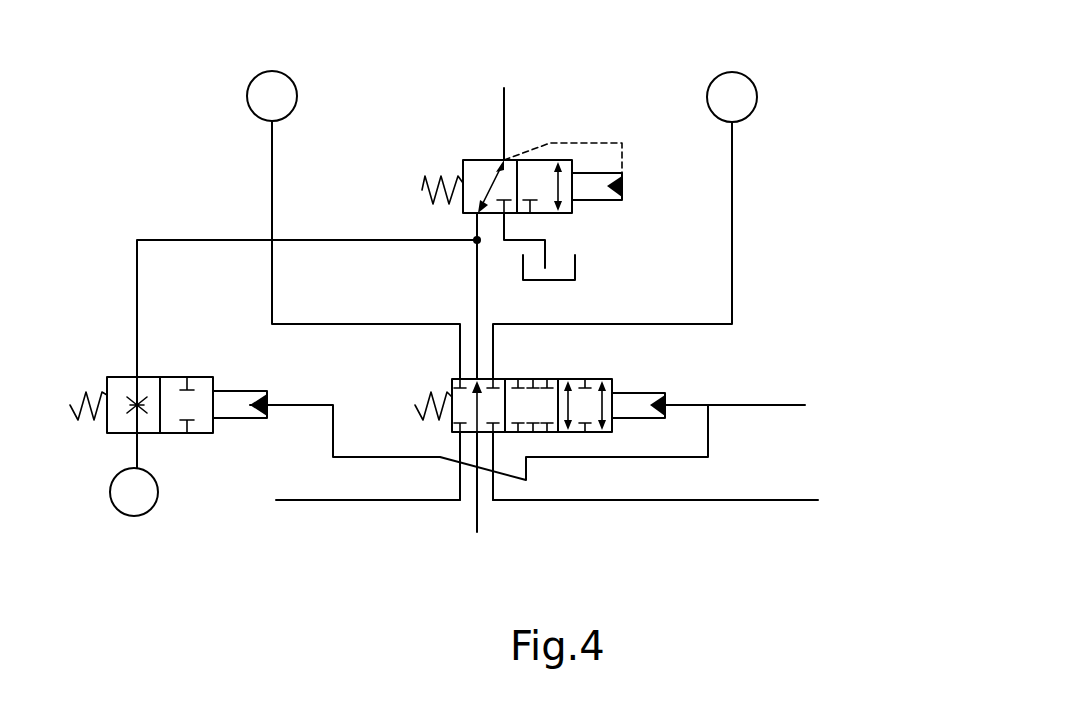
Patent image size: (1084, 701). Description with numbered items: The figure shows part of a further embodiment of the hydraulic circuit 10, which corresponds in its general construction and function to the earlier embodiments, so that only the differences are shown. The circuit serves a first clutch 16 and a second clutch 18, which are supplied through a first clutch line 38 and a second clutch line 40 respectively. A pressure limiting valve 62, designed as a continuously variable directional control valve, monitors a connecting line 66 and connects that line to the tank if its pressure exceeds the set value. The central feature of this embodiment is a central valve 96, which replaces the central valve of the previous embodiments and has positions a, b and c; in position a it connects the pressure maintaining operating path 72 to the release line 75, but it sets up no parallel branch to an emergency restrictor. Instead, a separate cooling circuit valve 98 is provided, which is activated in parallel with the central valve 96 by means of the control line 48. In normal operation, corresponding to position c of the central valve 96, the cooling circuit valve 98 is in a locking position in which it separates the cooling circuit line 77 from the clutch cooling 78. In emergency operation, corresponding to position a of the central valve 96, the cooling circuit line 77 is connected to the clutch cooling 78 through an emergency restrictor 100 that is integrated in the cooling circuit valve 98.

The hydraulic circuit 10 is at (790, 152).
The first clutch 16 is at (353, 285).
The second clutch 18 is at (625, 286).
The first clutch line 38 is at (336, 502).
The second clutch line 40 is at (650, 502).
The control line 48 is at (785, 404).
The pressure limiting valve 62 is at (472, 152).
The connecting line 66 is at (504, 113).
The pressure maintaining operating path 72 is at (477, 283).
The release line 75 is at (473, 517).
The cooling circuit line 77 is at (218, 238).
The clutch cooling 78 is at (134, 492).
The central valve 96 is at (622, 368).
The cooling circuit valve 98 is at (171, 440).
The emergency restrictor 100 is at (116, 384).